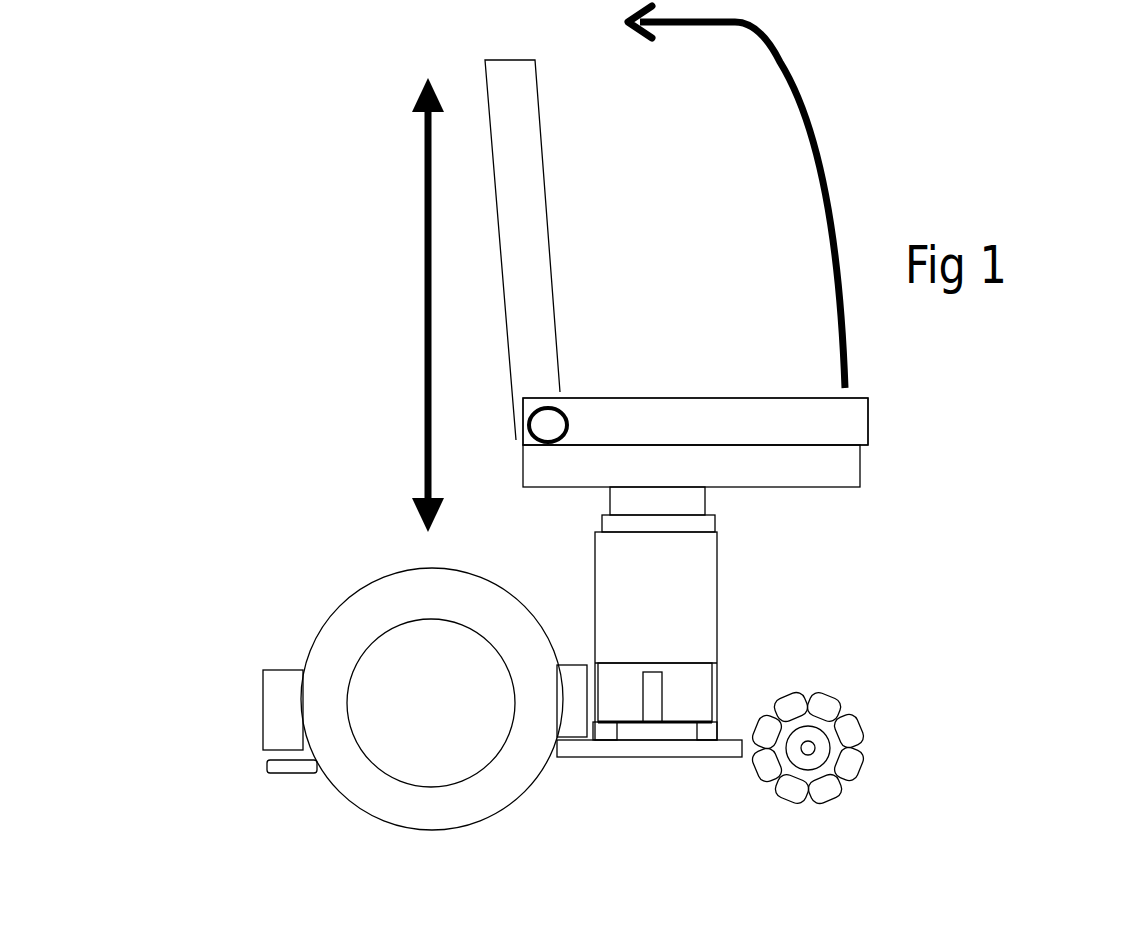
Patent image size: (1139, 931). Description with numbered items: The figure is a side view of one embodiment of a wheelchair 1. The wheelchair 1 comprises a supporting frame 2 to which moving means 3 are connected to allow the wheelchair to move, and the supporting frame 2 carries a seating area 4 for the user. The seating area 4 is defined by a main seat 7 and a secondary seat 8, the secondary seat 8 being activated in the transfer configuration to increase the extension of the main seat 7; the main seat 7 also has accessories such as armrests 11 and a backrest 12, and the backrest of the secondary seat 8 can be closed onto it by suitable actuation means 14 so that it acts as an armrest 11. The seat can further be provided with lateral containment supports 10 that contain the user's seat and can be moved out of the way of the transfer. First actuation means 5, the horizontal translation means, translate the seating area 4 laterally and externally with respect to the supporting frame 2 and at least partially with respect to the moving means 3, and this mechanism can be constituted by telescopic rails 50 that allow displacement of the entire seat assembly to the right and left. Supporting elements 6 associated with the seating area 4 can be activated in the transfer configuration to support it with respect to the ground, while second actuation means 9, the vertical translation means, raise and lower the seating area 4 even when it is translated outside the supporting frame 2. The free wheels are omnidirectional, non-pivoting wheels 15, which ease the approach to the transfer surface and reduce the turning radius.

The wheelchair 1 is at (623, 453).
The supporting frame 2 is at (661, 784).
The moving means 3 is at (656, 734).
The seating area 4 is at (652, 422).
The first actuation means 5 is at (591, 758).
The supporting elements 6 is at (686, 702).
The main seat 7 is at (691, 400).
The secondary seat 8 is at (667, 448).
The second actuation means 9 is at (717, 602).
The lateral containment supports 10 is at (831, 427).
The armrests 11 is at (882, 427).
The backrest 12 is at (535, 104).
The actuation means 14 is at (492, 425).
The omnidirectional non-pivoting wheels 15 is at (840, 741).
The telescopic rails 50 is at (609, 735).